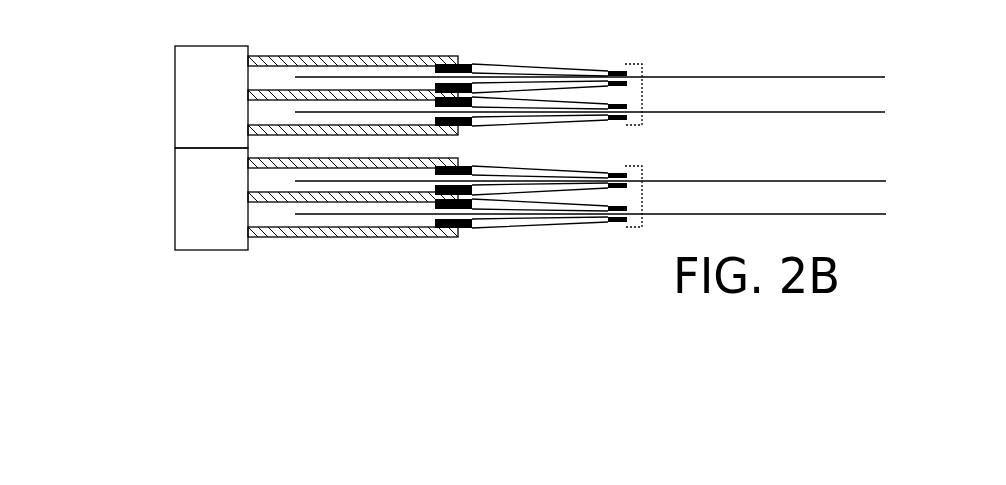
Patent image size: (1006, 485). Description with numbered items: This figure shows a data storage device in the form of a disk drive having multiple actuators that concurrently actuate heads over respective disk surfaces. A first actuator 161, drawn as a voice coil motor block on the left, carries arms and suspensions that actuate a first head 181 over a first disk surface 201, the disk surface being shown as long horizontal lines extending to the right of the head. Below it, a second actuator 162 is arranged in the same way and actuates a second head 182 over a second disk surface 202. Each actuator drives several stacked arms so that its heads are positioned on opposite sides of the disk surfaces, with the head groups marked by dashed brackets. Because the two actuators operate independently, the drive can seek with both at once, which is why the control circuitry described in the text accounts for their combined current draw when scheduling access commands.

The first actuator 161 is at (175, 53).
The second actuator 162 is at (175, 156).
The first head 181 is at (613, 67).
The second head 182 is at (619, 170).
The first disk surface 201 is at (876, 73).
The second disk surface 202 is at (872, 176).